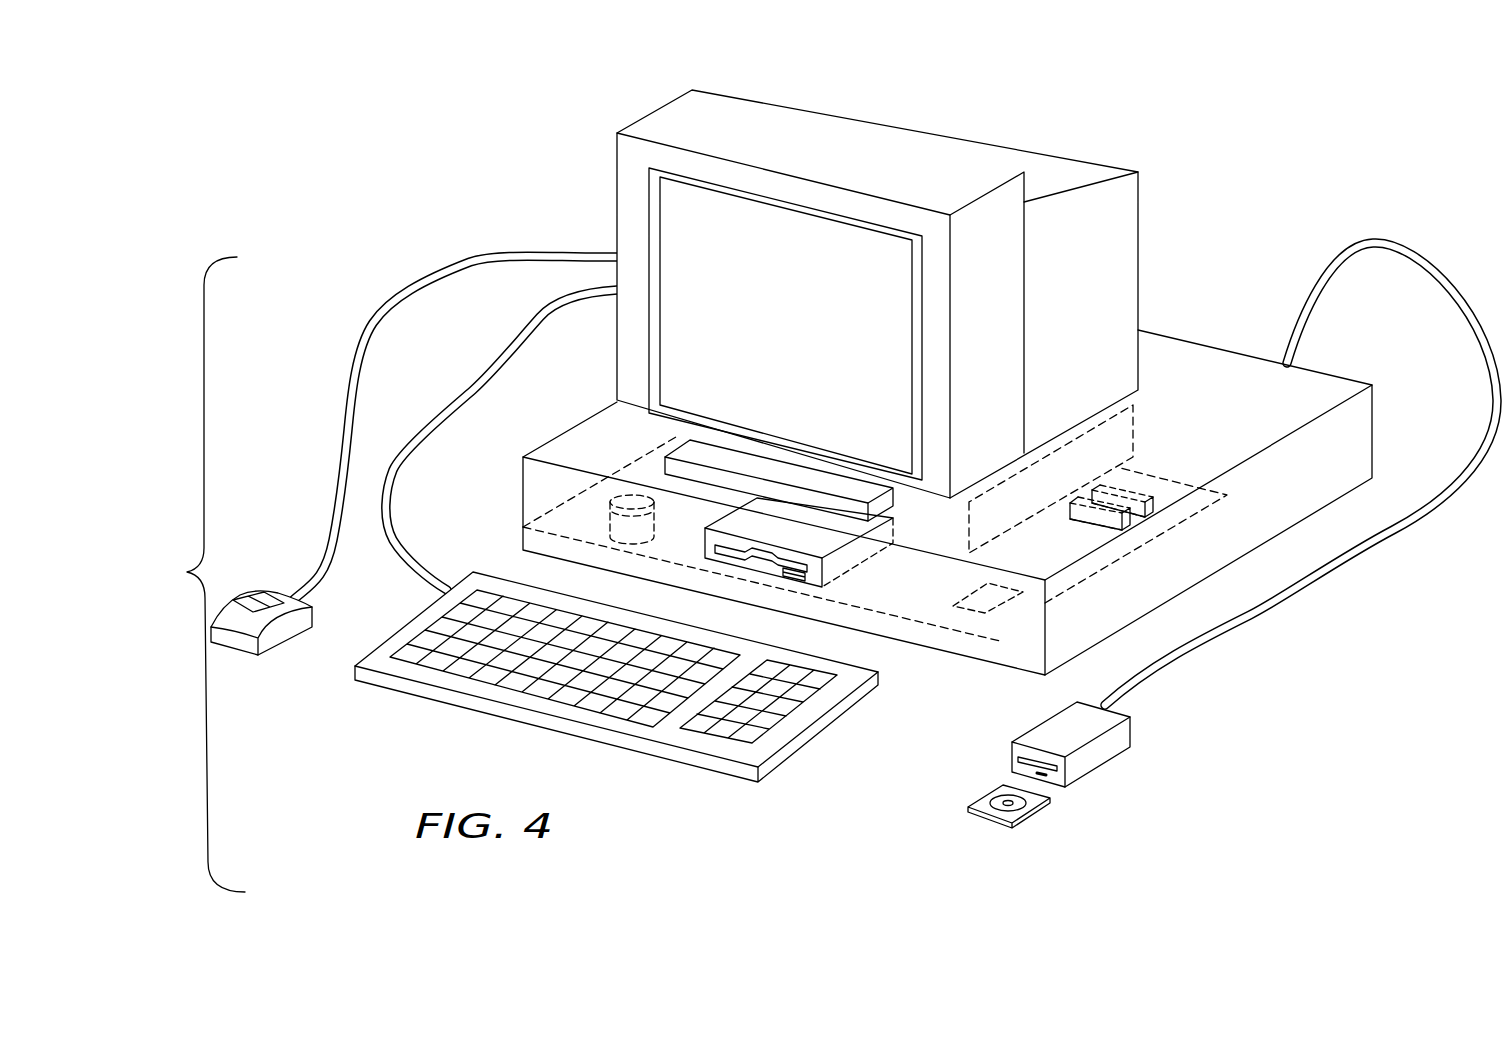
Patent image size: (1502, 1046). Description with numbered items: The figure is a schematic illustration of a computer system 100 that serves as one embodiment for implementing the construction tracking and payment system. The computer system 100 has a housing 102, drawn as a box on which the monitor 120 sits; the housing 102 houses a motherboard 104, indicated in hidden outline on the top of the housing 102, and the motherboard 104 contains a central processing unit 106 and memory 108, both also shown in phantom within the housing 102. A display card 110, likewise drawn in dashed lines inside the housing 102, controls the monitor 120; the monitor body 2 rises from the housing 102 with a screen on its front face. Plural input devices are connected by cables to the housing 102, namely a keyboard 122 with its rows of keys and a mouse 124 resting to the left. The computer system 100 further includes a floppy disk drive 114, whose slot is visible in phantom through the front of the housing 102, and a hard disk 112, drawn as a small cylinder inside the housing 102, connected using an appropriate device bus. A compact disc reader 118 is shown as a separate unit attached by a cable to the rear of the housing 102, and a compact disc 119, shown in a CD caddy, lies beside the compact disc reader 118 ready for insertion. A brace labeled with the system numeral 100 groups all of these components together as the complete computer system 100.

The computer 2 is at (1131, 190).
The computer system 100 is at (188, 574).
The housing 102 is at (947, 490).
The motherboard 104 is at (1183, 493).
The central processing unit 106 is at (985, 598).
The memory 108 is at (1120, 493).
The display card 110 is at (1122, 412).
The hard disk 112 is at (610, 522).
The floppy disk drive 114 is at (815, 580).
The compact disc reader 118 is at (1071, 763).
The compact disc 119 is at (1030, 807).
The monitor 120 is at (963, 143).
The keyboard 122 is at (827, 730).
The mouse 124 is at (237, 597).